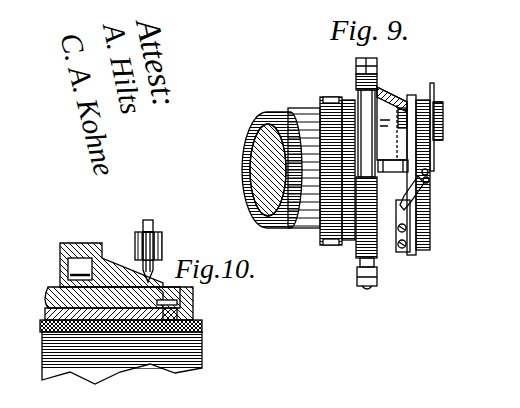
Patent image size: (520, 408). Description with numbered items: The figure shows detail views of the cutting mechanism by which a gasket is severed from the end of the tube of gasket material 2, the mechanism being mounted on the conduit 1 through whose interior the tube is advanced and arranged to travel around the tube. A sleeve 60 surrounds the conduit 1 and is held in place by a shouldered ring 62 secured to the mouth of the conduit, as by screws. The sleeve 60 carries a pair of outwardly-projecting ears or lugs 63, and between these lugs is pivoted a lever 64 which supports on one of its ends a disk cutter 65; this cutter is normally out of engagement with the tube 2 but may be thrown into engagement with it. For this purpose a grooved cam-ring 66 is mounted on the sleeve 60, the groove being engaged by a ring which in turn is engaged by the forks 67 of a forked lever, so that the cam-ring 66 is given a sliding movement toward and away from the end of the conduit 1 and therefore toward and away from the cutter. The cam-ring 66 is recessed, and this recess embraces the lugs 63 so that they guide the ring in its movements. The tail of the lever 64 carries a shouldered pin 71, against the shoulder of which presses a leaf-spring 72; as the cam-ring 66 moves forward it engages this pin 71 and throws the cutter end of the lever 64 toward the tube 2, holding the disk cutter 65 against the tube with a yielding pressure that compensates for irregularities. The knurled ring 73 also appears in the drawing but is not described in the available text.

In FIG. 9, the conduit 1 is at (304, 168).
In FIG. 10, the conduit 1 is at (46, 300).
In FIG. 9, the tube of gasket material 2 is at (258, 116).
In FIG. 10, the tube of gasket material 2 is at (203, 330).
In FIG. 10, the sleeve 60 is at (190, 292).
In FIG. 10, the ring 62 is at (195, 313).
In FIG. 9, the ears or lugs 63 is at (400, 160).
In FIG. 9, the lever 64 is at (437, 138).
In FIG. 9, the disk cutter 65 is at (432, 100).
In FIG. 9, the cam-ring 66 is at (397, 100).
In FIG. 10, the cam-ring 66 is at (127, 258).
In FIG. 9, the forks 67 is at (376, 62).
In FIG. 9, the shouldered pin 71 is at (420, 241).
In FIG. 10, the shouldered pin 71 is at (153, 230).
In FIG. 9, the leaf-spring 72 is at (410, 223).
In FIG. 10, the leaf-spring 72 is at (140, 232).
In FIG. 9, the knurled ring 73 is at (340, 96).